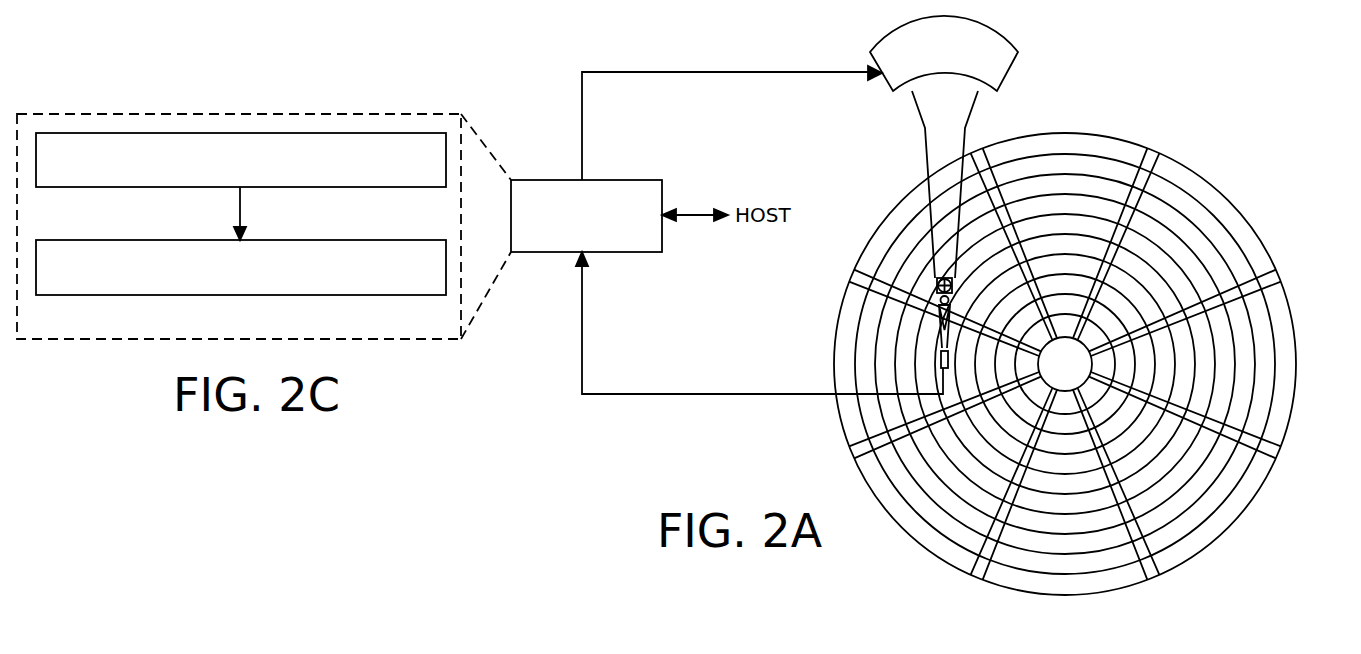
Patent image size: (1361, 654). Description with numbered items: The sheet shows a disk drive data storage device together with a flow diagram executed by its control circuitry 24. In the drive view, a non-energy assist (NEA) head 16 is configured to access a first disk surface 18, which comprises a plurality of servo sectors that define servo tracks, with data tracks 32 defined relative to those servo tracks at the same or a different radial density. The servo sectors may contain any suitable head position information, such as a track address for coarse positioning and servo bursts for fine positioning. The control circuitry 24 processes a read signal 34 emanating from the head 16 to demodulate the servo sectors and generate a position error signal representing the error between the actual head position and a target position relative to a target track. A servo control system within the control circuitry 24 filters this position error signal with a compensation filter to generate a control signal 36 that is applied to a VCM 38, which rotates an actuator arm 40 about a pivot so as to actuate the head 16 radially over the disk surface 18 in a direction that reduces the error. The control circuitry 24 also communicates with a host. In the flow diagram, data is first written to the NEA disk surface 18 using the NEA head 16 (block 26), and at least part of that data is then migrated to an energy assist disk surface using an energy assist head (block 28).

In FIG. 2A, the non-energy assist (NEA) head 16 is at (928, 355).
In FIG. 2A, the first disk surface 18 is at (1232, 181).
In FIG. 2A, the control circuitry 24 is at (628, 180).
In FIG. 2C, the block (write data to NEA disk surface) 26 is at (400, 188).
In FIG. 2C, the block (migrate data to EA disk surface) 28 is at (400, 295).
In FIG. 2A, the data tracks 32 is at (1055, 158).
In FIG. 2A, the read signal 34 is at (653, 393).
In FIG. 2A, the control signal 36 is at (582, 120).
In FIG. 2A, the VCM 38 is at (893, 88).
In FIG. 2A, the actuator arm 40 is at (925, 150).